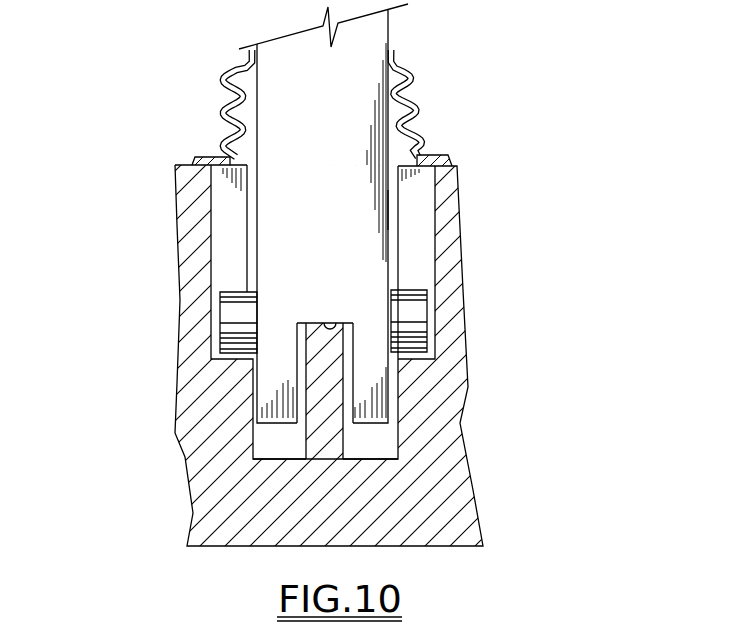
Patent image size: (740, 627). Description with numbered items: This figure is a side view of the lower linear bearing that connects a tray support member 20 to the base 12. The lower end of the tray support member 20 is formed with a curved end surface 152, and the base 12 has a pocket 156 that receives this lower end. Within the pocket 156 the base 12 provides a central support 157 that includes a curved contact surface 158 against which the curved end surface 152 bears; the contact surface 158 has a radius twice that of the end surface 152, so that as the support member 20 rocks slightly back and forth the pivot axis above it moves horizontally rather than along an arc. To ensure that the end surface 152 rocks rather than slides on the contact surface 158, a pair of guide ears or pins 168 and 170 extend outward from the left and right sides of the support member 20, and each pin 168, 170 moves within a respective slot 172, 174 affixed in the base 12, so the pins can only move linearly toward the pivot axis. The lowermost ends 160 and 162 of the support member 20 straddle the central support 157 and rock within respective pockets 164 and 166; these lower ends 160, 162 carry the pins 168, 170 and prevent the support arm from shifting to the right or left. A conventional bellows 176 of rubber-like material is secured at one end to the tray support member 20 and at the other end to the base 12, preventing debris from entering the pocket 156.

The base 12 is at (360, 521).
The tray support member 20 is at (328, 215).
The curved end surface 152 is at (322, 323).
The pocket 156 is at (395, 212).
The central support 157 is at (323, 428).
The curved contact surface 158 is at (310, 327).
The lowermost end 160 is at (277, 392).
The lowermost end 162 is at (383, 393).
The pocket 164 is at (272, 448).
The pocket 166 is at (378, 450).
The guide pin 168 is at (220, 322).
The guide pin 170 is at (415, 317).
The slot 172 is at (227, 225).
The slot 174 is at (418, 253).
The bellows 176 is at (223, 131).